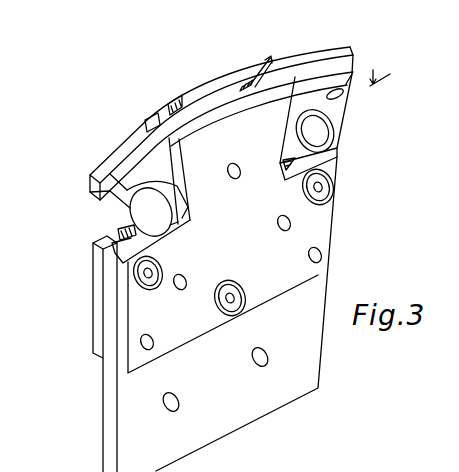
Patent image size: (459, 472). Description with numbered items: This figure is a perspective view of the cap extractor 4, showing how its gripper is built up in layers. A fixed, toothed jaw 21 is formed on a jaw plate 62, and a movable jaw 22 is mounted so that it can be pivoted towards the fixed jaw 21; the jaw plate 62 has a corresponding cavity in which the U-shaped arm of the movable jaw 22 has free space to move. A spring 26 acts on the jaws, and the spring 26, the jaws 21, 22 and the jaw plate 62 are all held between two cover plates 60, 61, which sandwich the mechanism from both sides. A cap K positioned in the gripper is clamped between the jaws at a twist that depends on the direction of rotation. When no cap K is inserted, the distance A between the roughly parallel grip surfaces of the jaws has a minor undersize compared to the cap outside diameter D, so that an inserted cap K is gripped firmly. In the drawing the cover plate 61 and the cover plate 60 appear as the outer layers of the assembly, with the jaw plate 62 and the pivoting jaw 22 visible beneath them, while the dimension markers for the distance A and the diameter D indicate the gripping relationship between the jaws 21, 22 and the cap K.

The base plate 4 is at (352, 471).
The fixed toothed jaw 21 is at (393, 110).
The movable jaw 22 is at (338, 87).
The spring 26 is at (176, 107).
The cover plate 60 is at (236, 103).
The cover plate 61 is at (207, 92).
The jaw plate 62 is at (101, 272).
The cap K is at (331, 114).
The cap outside diameter D is at (378, 92).
The distance of the grip surfaces A is at (105, 248).